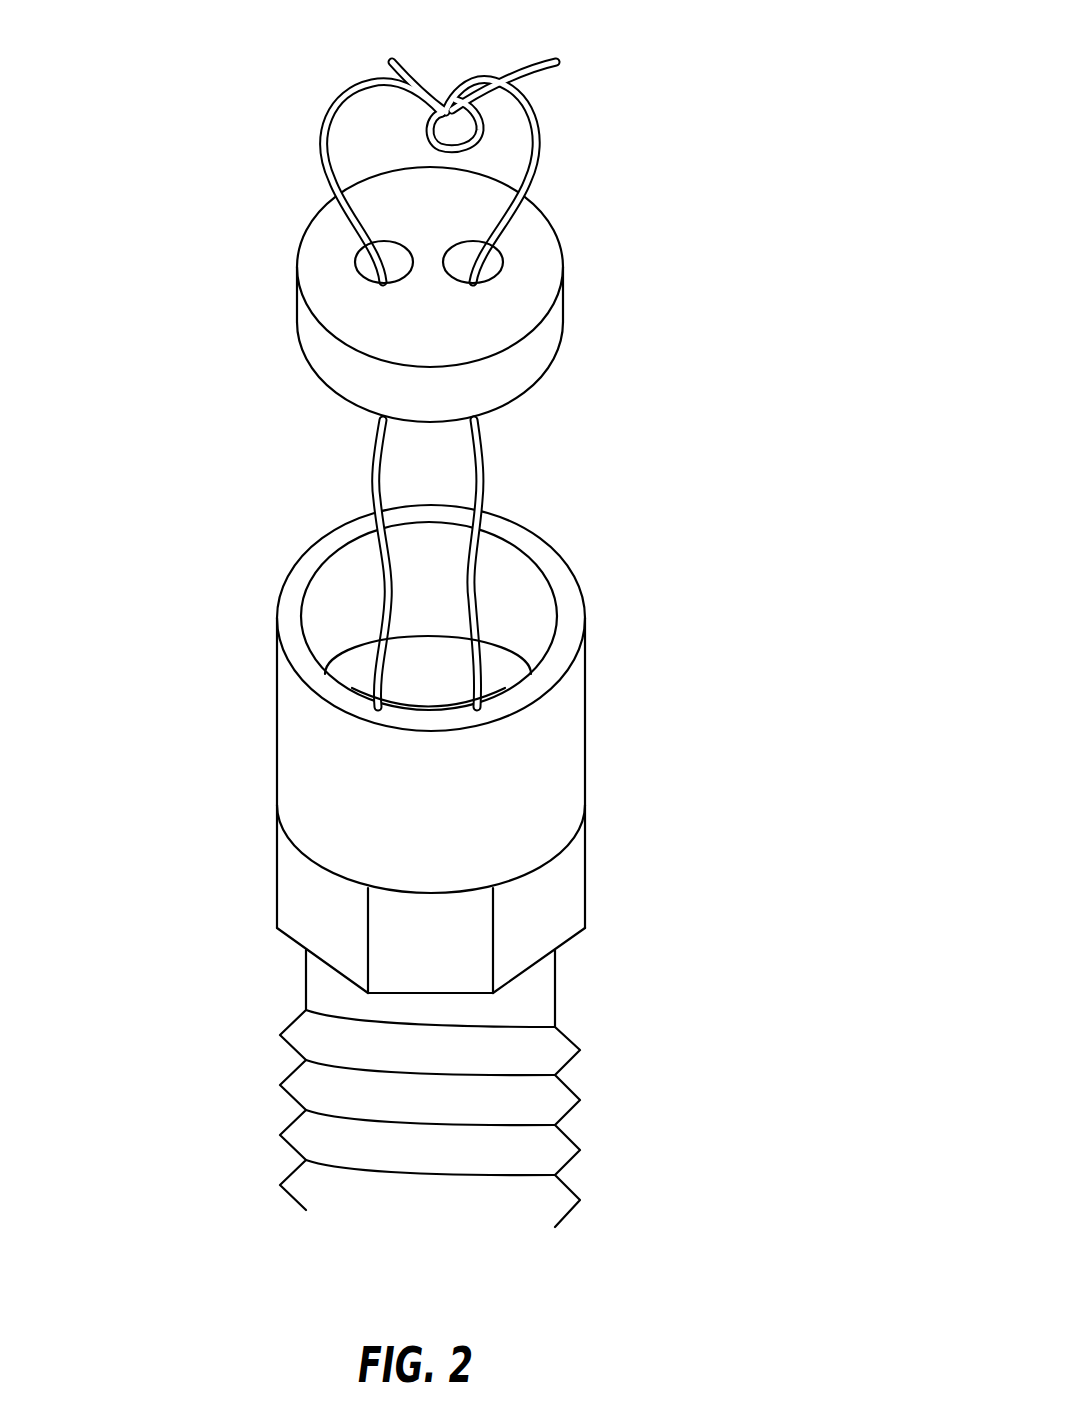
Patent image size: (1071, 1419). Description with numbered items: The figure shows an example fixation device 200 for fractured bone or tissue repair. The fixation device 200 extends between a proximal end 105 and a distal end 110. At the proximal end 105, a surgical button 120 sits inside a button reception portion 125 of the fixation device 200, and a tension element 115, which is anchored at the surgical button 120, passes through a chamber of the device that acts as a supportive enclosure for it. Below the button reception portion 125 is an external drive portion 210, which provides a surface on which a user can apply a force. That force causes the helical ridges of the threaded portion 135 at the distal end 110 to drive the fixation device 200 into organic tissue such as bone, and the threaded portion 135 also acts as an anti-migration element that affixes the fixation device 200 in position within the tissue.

The fixation device 200 is at (485, 622).
The proximal end 105 is at (443, 735).
The distal end 110 is at (414, 1086).
The tension element 115 is at (347, 362).
The surgical button 120 is at (520, 290).
The button reception portion 125 is at (660, 790).
The threaded portion 135 is at (512, 1088).
The external drive portion 210 is at (527, 899).